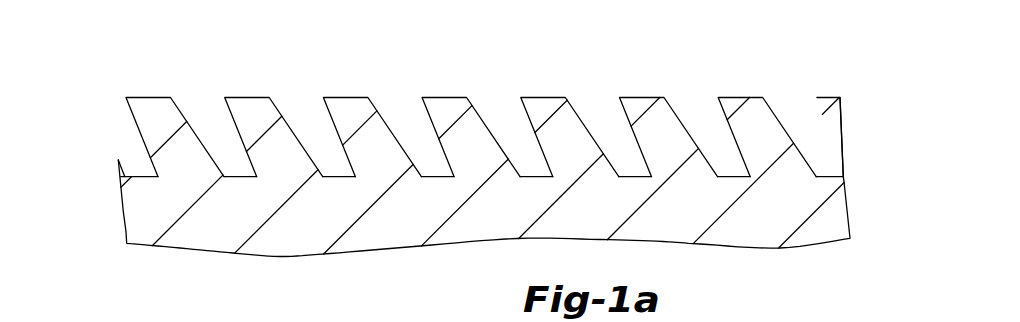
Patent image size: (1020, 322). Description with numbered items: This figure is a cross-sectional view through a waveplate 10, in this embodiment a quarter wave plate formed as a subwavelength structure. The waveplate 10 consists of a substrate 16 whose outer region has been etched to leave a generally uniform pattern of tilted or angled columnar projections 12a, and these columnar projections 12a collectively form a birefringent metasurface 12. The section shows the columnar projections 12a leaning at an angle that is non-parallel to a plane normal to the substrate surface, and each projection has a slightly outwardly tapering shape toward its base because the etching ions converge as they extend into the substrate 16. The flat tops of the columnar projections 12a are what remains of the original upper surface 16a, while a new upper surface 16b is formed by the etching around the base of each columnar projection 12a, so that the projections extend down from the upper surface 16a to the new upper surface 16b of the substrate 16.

The waveplate 10 is at (160, 57).
The birefringent metasurface 12 is at (85, 97).
The columnar projections 12a is at (430, 122).
The substrate 16 is at (830, 212).
The upper surface 16a is at (728, 97).
The new upper surface 16b is at (828, 176).